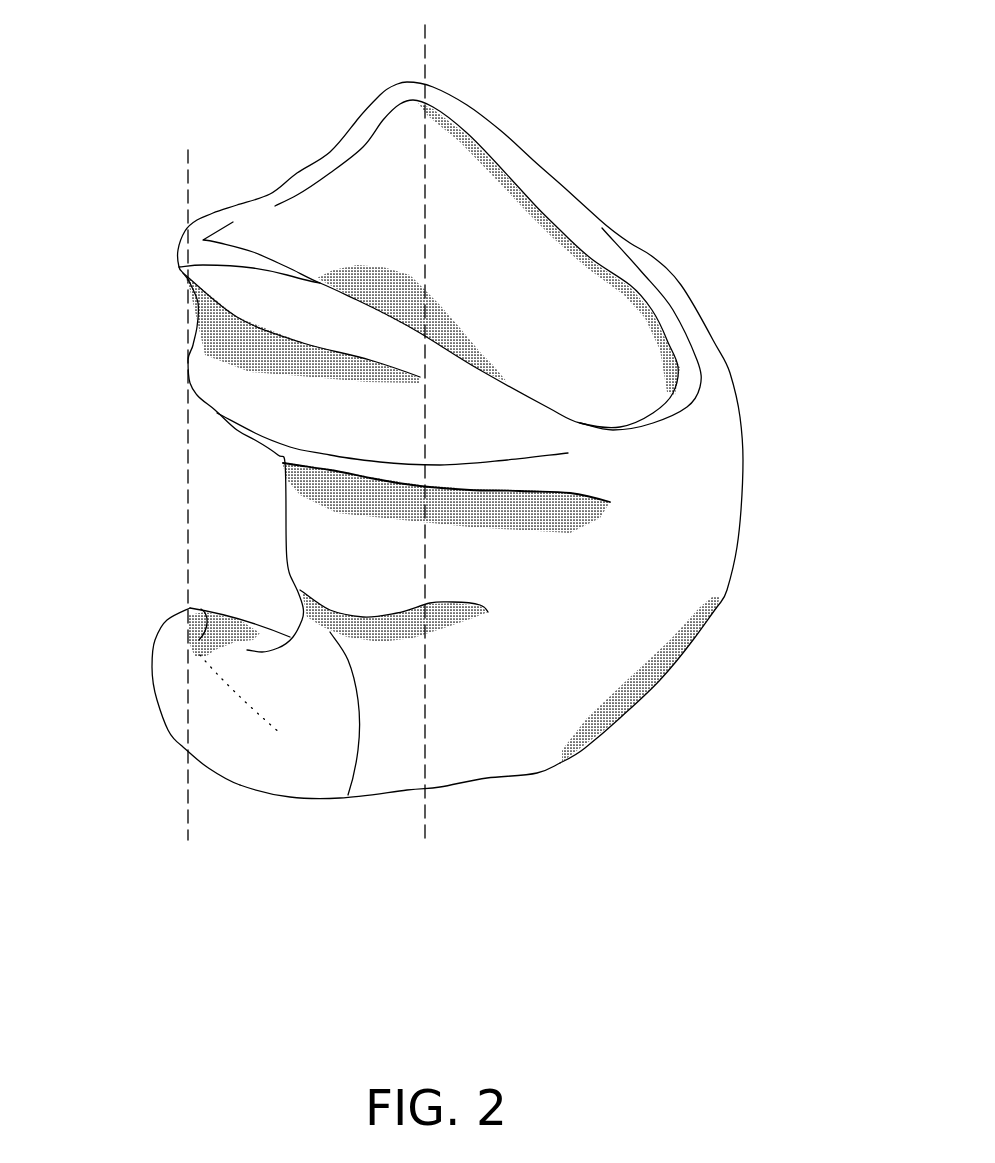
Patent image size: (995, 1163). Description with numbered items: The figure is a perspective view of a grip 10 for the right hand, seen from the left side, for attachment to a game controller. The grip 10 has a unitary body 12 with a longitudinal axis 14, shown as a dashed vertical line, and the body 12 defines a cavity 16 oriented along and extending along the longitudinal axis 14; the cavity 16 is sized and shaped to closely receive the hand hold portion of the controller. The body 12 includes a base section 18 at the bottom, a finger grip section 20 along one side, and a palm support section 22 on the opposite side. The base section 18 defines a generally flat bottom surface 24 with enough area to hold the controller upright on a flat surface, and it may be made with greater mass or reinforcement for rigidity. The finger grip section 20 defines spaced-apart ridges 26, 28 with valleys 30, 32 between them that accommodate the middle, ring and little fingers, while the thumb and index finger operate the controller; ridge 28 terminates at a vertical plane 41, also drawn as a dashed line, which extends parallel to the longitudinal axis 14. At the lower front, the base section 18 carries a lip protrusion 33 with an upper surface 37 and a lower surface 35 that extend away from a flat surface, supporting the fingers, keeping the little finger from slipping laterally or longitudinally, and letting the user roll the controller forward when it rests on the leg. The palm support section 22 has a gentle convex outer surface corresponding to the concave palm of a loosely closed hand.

The grip 10 is at (729, 197).
The unitary body 12 is at (718, 515).
The longitudinal axis 14 is at (433, 45).
The cavity 16 is at (500, 290).
The base section 18 is at (186, 754).
The finger grip section 20 is at (286, 529).
The palm support section 22 is at (726, 592).
The bottom surface 24 is at (450, 788).
The ridge 26 is at (307, 580).
The ridge 28 is at (237, 430).
The valley 30 is at (348, 795).
The valley 32 is at (323, 517).
The lip protrusion 33 is at (162, 657).
The lower surface 35 is at (158, 697).
The upper surface 37 is at (198, 611).
The vertical plane 41 is at (190, 180).